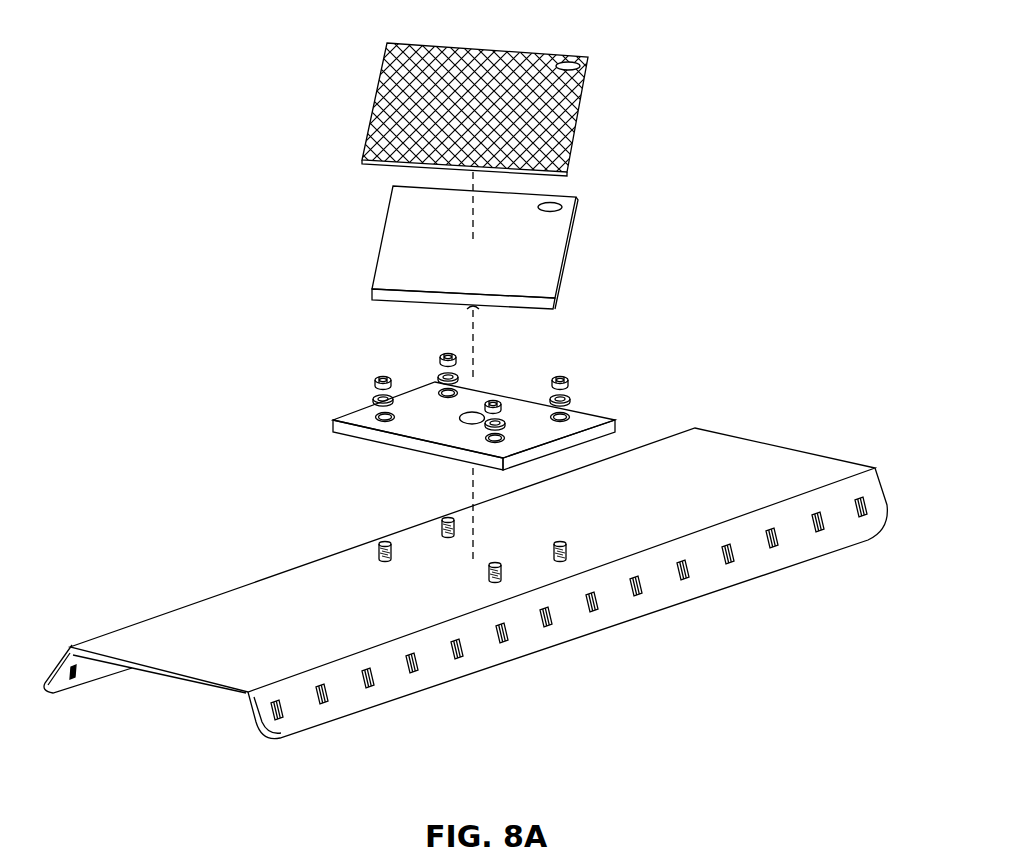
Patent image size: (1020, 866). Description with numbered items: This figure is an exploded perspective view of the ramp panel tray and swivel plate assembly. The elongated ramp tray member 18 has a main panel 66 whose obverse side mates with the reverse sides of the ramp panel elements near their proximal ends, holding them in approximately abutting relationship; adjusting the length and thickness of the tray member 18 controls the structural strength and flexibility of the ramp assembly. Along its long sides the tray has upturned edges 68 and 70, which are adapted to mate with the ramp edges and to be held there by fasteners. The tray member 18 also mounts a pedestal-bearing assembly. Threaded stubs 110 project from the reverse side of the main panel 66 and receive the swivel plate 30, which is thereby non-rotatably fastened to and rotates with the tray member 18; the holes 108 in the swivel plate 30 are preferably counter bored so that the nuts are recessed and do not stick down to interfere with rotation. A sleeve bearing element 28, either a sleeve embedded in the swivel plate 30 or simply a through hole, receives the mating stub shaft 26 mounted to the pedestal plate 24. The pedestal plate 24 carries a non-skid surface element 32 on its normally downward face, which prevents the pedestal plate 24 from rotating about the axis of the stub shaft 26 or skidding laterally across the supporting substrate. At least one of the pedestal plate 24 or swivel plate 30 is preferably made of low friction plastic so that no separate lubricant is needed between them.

The ramp tray member 18 is at (465, 586).
The pedestal plate 24 is at (575, 245).
The stub shaft 26 is at (470, 310).
The sleeve bearing element 28 is at (477, 412).
The swivel plate 30 is at (406, 445).
The non-skid surface element 32 is at (496, 60).
The main panel 66 is at (252, 592).
The upturned edge 68 is at (88, 675).
The upturned edge 70 is at (320, 723).
The holes 108 is at (565, 412).
The threaded stubs 110 is at (567, 555).